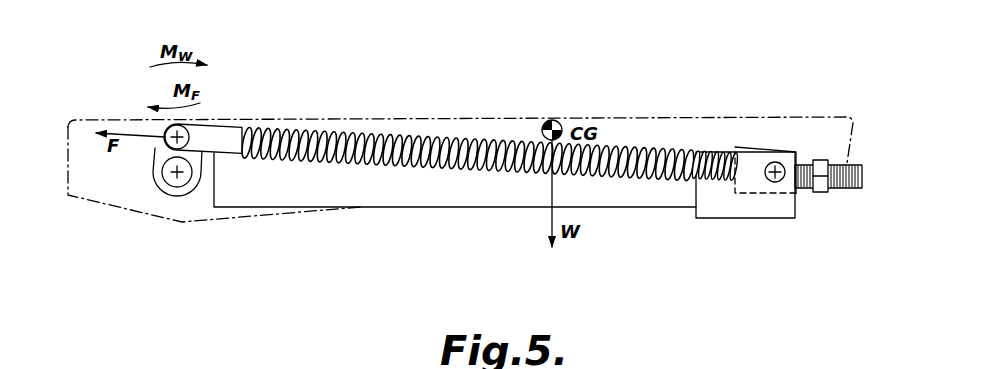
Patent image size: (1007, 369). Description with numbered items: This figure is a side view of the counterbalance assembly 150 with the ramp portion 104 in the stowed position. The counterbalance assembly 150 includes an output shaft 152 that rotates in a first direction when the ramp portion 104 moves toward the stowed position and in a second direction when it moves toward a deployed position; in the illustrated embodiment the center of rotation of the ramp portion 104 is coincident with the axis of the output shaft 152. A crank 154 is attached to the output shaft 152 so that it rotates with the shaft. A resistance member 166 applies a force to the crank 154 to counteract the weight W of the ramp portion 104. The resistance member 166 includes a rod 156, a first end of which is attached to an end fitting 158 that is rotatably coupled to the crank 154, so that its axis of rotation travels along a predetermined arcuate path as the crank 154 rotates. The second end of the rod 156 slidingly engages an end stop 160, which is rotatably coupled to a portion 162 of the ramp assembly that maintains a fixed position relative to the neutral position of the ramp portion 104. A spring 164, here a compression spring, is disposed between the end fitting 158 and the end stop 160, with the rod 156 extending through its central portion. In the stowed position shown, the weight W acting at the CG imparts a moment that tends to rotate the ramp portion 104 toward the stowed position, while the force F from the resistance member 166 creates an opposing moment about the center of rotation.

The ramp portion 104 is at (114, 120).
The counterbalance assembly 150 is at (481, 140).
The output shaft 152 is at (153, 196).
The crank 154 is at (180, 198).
The rod 156 is at (845, 190).
The end fitting 158 is at (228, 126).
The end stop 160 is at (768, 195).
The portion of the ramp assembly 162 is at (712, 218).
The spring 164 is at (344, 134).
The resistance member 166 is at (621, 238).